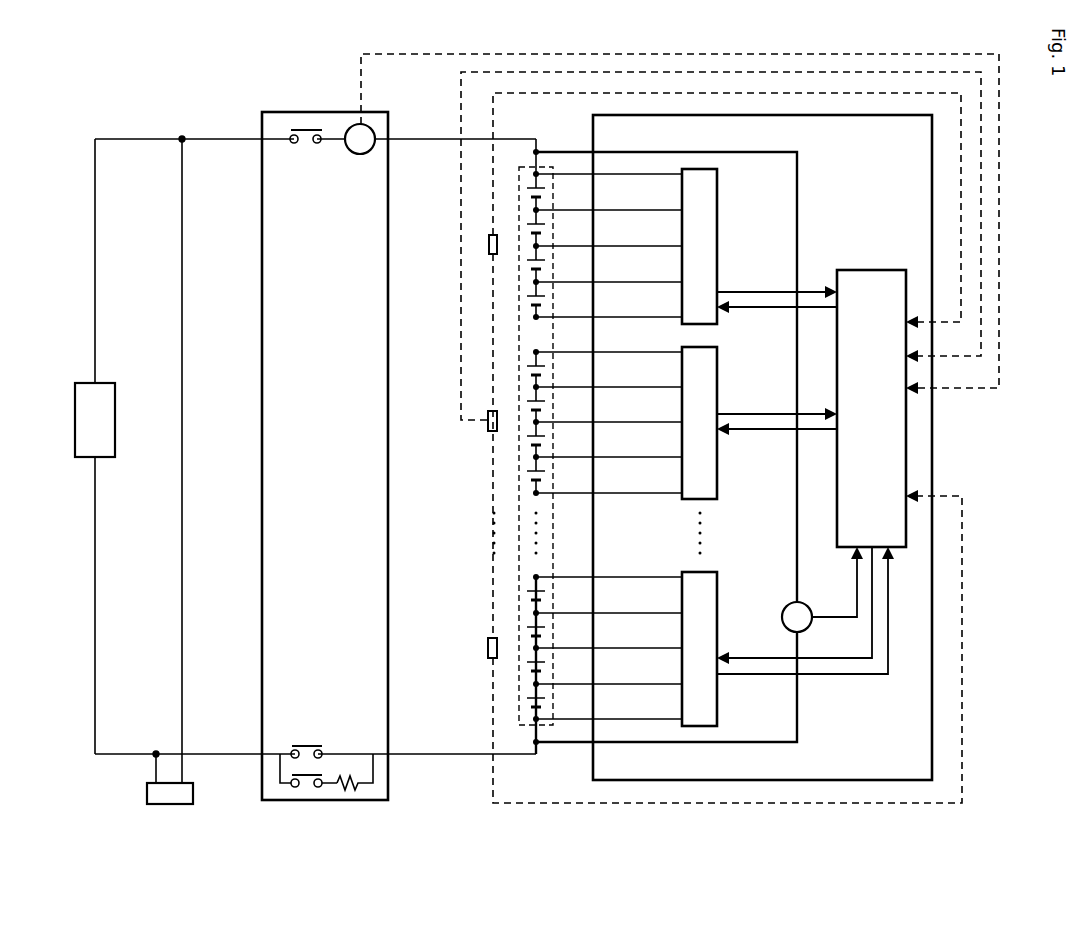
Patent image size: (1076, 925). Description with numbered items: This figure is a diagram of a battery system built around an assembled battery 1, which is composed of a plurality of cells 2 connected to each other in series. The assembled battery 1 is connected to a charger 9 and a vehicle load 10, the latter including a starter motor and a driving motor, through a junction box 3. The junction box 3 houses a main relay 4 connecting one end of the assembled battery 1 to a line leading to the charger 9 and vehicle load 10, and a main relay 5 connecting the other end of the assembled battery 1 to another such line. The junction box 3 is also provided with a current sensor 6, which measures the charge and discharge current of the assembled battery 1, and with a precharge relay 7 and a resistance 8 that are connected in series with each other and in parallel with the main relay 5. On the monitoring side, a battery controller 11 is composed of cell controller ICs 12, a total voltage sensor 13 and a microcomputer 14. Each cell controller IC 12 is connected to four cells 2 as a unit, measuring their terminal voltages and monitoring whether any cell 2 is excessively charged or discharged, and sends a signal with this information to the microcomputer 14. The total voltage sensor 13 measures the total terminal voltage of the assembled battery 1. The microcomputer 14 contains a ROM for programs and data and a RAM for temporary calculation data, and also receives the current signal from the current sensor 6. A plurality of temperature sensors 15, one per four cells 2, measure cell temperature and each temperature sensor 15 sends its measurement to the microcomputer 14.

The assembled battery 1 is at (548, 166).
The cell 2 is at (553, 446).
The junction box 3 is at (278, 112).
The main relay 4 is at (305, 130).
The main relay 5 is at (295, 749).
The current sensor 6 is at (368, 152).
The precharge relay 7 is at (293, 777).
The resistance 8 is at (357, 786).
The charger 9 is at (150, 792).
The vehicle load 10 is at (84, 421).
The battery controller 11 is at (932, 468).
The cell controller IC 12 is at (724, 447).
The total voltage sensor 13 is at (791, 603).
The microcomputer 14 is at (899, 422).
The temperature sensor 15 is at (466, 448).